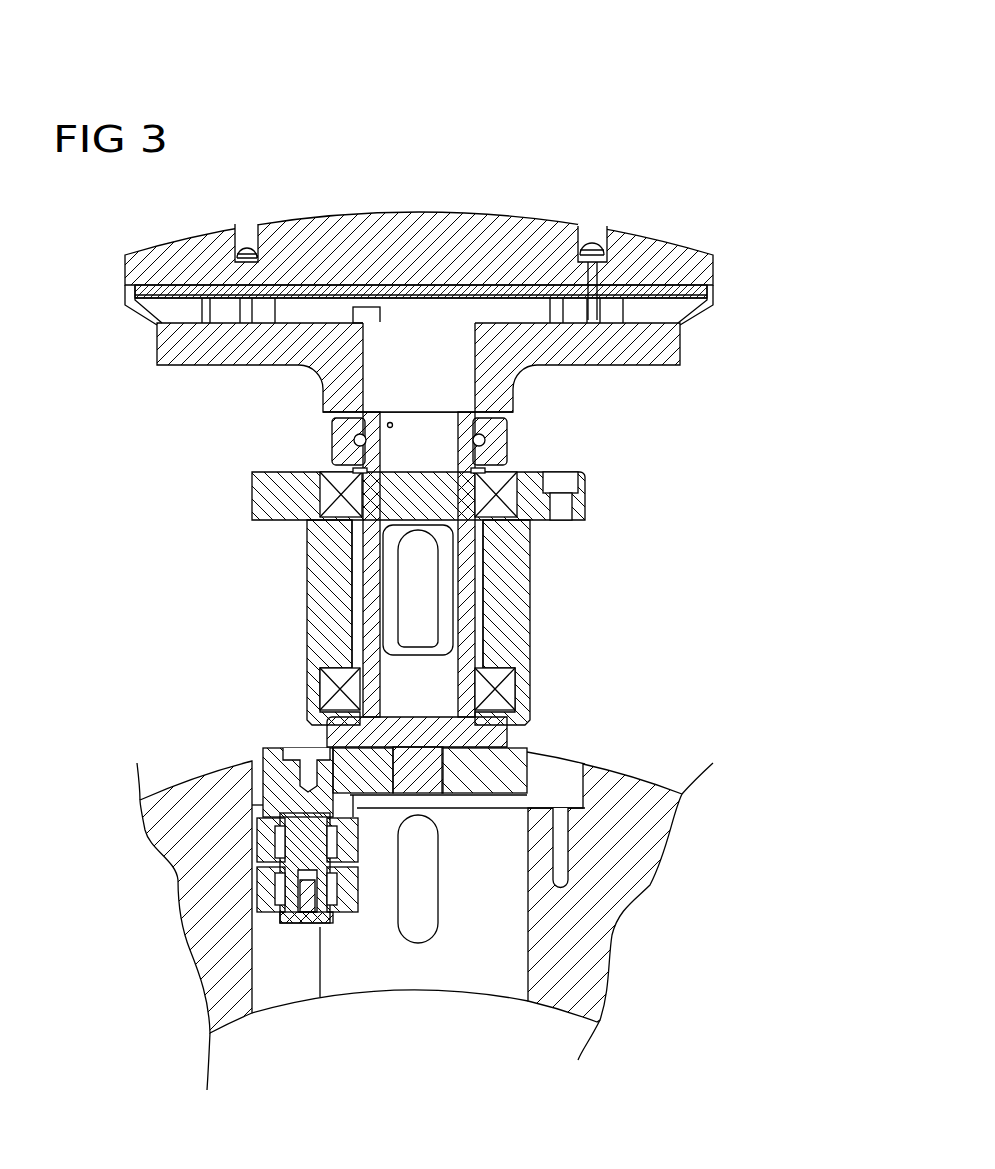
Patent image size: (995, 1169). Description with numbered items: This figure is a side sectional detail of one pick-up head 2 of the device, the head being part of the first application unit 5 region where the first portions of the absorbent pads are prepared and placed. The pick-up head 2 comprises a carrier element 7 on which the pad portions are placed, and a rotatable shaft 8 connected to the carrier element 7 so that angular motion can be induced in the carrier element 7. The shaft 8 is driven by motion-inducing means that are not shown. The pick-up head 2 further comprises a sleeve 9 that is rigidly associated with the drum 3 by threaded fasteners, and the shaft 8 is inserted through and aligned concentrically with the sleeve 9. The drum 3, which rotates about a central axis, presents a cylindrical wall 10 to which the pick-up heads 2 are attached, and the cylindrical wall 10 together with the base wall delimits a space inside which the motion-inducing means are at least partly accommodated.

The first application unit 5 is at (631, 133).
The carrier element 7 is at (313, 243).
The pick-up head 2 is at (633, 368).
The rotatable shaft 8 is at (467, 560).
The sleeve 9 is at (507, 642).
The cylindrical wall 10 is at (193, 802).
The drum 3 is at (657, 777).